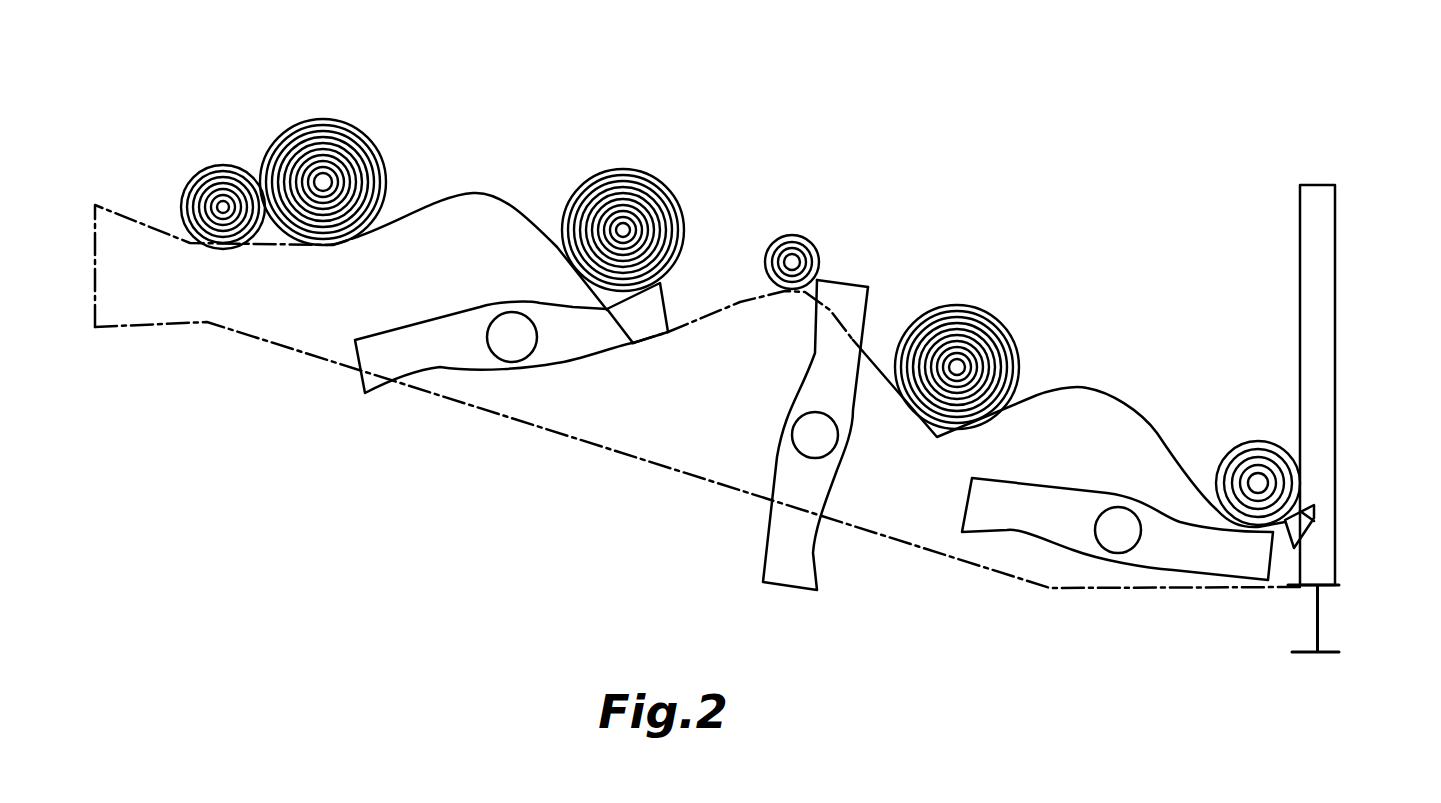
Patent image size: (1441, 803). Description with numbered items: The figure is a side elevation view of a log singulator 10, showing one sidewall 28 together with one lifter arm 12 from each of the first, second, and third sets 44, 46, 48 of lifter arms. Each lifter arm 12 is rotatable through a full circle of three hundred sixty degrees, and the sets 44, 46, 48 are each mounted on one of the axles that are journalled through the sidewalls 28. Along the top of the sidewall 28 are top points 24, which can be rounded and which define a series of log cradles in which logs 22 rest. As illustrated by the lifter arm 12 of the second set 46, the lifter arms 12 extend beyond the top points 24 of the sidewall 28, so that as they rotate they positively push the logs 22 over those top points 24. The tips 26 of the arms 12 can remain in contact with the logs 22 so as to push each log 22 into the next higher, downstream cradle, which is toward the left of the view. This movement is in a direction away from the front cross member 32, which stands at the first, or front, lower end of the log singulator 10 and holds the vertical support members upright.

The log singulator 10 is at (905, 180).
The lifter arm 12 is at (570, 343).
The log 22 is at (620, 168).
The top point 24 is at (788, 291).
The tip 26 is at (840, 277).
The sidewall 28 is at (642, 432).
The cross member 32 is at (1329, 612).
The first set of lifter arms 44 is at (1187, 550).
The second set of lifter arms 46 is at (782, 517).
The third set of lifter arms 48 is at (452, 355).